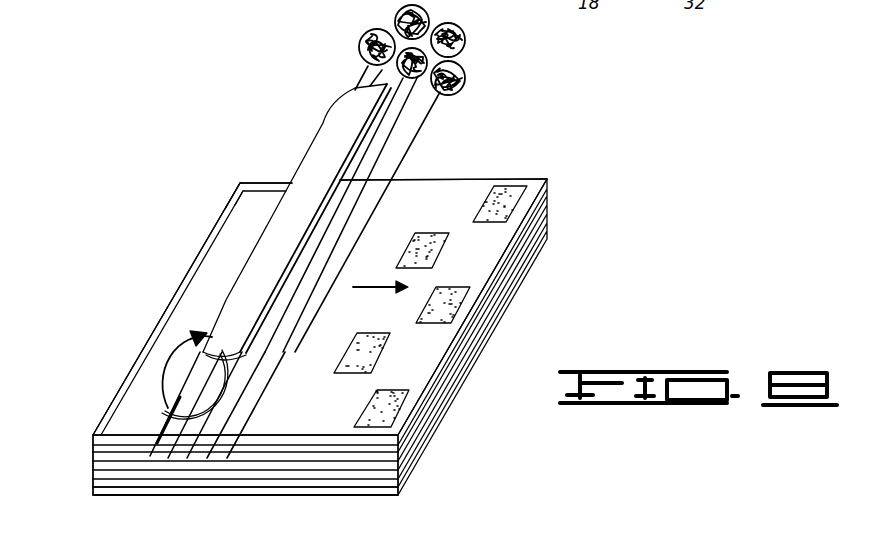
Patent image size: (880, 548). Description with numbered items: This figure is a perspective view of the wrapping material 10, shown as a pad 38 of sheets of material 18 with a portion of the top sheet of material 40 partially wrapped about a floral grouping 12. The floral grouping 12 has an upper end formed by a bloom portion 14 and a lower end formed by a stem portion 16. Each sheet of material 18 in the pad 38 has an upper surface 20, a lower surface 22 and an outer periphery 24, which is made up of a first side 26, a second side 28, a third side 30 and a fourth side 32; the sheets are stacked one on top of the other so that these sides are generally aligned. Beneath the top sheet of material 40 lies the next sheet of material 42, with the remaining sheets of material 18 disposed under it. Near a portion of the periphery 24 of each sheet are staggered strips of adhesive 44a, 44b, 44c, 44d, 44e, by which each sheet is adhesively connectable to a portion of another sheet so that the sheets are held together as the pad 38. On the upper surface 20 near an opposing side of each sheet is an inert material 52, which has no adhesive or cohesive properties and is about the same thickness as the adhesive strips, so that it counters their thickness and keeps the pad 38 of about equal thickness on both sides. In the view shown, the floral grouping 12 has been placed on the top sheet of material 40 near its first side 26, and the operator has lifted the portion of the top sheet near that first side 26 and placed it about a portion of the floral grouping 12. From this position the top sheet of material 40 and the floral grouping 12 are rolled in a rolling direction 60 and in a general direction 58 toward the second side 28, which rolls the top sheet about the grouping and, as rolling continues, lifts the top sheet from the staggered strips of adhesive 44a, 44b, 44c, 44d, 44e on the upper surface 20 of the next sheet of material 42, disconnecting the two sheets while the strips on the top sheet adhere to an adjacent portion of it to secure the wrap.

The wrapping material 10 is at (272, 135).
The floral grouping 12 is at (478, 40).
The bloom portion 14 is at (395, 12).
The stem portion 16 is at (200, 465).
The sheet of material 18 is at (176, 292).
The upper surface 20 is at (408, 205).
The lower surface 22 is at (350, 110).
The outer periphery 24 is at (385, 442).
The first side 26 is at (205, 255).
The second side 28 is at (550, 180).
The third side 30 is at (478, 178).
The fourth side 32 is at (330, 437).
The pad 38 is at (113, 478).
The top sheet of material 40 is at (430, 178).
The next sheet of material 42 is at (220, 218).
The staggered strip of adhesive 44a is at (502, 204).
The staggered strip of adhesive 44b is at (428, 257).
The staggered strip of adhesive 44c is at (440, 307).
The staggered strip of adhesive 44d is at (372, 352).
The staggered strip of adhesive 44e is at (378, 402).
The inert material 52 is at (247, 212).
The direction 58 is at (380, 290).
The rolling direction 60 is at (173, 352).